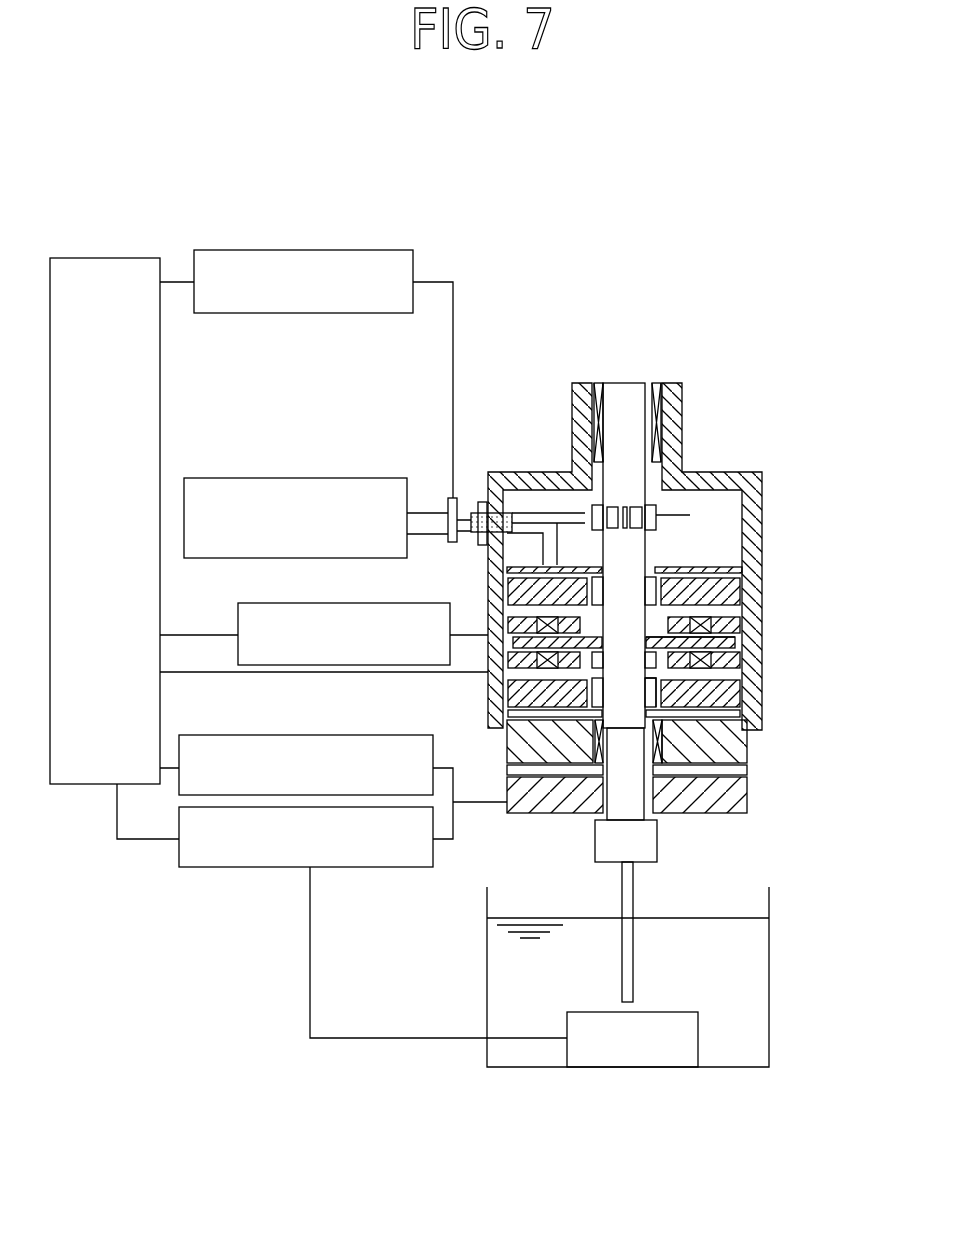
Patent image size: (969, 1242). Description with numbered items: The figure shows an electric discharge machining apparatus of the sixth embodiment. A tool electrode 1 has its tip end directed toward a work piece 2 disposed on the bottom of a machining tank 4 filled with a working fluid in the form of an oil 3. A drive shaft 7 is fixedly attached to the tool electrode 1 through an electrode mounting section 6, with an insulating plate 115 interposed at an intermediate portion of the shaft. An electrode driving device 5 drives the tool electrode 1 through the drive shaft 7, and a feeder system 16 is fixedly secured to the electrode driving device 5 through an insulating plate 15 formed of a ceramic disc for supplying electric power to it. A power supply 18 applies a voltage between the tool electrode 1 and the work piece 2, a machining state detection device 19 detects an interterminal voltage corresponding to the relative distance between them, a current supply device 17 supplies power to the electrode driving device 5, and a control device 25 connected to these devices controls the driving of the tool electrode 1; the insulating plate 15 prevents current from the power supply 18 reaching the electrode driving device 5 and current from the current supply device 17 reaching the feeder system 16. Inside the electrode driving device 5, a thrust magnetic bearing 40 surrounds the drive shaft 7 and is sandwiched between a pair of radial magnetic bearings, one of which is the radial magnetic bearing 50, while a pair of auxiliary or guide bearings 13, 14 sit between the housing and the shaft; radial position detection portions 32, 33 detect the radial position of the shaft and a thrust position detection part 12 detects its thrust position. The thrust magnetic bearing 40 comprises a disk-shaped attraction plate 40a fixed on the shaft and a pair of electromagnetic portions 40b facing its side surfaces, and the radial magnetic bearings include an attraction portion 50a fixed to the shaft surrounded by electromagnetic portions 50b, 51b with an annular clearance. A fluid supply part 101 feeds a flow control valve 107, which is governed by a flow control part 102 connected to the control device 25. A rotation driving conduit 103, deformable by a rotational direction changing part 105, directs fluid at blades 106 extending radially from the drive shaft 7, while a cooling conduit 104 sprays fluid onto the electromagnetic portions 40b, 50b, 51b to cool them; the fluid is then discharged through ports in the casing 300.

The tool electrode 1 is at (633, 897).
The work piece 2 is at (698, 1048).
The oil 3 is at (742, 918).
The machining tank 4 is at (769, 963).
The electrode driving device 5 is at (498, 690).
The electrode mounting section 6 is at (657, 845).
The drive shaft 7 is at (498, 570).
The thrust position detection part 12 is at (503, 730).
The auxiliary or guide bearing 13 is at (657, 383).
The auxiliary or guide bearing 14 is at (747, 740).
The insulating plate 15 is at (747, 769).
The feeder system 16 is at (747, 790).
The current supply device 17 is at (372, 603).
The power supply 18 is at (188, 870).
The machining state detection device 19 is at (388, 735).
The control device 25 is at (104, 258).
The radial position detection portion 32 is at (730, 640).
The radial position detection portion 33 is at (745, 692).
The thrust magnetic bearing 40 is at (628, 633).
The attraction plate 40a is at (535, 628).
The electromagnetic portions 40b is at (540, 660).
The radial magnetic bearing 50 is at (735, 580).
The attraction portion 50a is at (705, 567).
The electromagnetic portion 50b is at (740, 690).
The electromagnetic portion 51b is at (735, 648).
The fluid supply part 101 is at (295, 478).
The flow control part 102 is at (305, 250).
The rotation driving conduit 103 is at (556, 523).
The cooling conduit 104 is at (512, 513).
The rotational direction changing part 105 is at (481, 502).
The blades 106 is at (680, 563).
The flow control valve 107 is at (452, 498).
The insulating plate 115 is at (665, 705).
The casing 300 is at (657, 517).